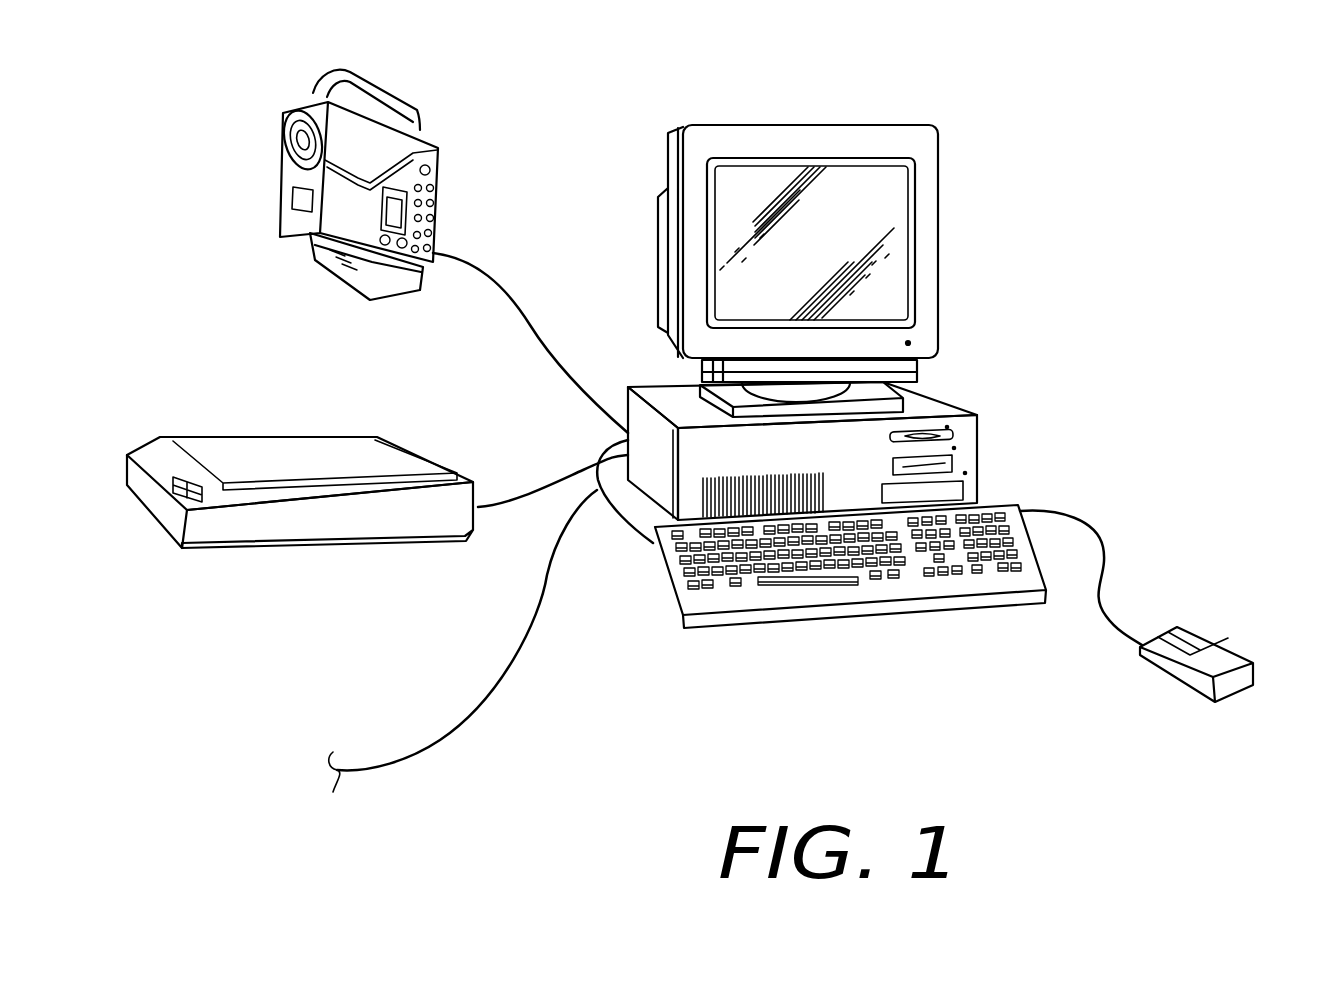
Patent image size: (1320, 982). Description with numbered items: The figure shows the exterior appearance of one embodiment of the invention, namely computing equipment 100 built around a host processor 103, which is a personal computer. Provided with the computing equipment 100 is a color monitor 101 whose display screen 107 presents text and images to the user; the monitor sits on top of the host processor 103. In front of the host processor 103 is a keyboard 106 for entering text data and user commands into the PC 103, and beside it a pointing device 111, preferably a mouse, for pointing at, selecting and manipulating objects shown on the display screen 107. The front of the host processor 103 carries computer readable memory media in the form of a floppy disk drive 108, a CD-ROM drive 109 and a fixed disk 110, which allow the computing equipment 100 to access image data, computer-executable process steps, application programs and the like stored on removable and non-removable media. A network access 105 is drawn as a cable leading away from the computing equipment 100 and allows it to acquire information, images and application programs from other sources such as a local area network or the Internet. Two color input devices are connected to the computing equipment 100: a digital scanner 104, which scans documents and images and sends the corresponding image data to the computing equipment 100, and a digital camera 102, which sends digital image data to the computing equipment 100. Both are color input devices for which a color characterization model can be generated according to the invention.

The computing equipment 100 is at (918, 85).
The color monitor 101 is at (851, 225).
The digital camera 102 is at (440, 157).
The host processor 103 is at (831, 410).
The digital scanner 104 is at (357, 543).
The network access 105 is at (370, 763).
The keyboard 106 is at (780, 600).
The display screen 107 is at (893, 207).
The floppy disk drive 108 is at (955, 437).
The CD-ROM drive 109 is at (953, 465).
The fixed disk 110 is at (965, 492).
The pointing device 111 is at (1230, 688).